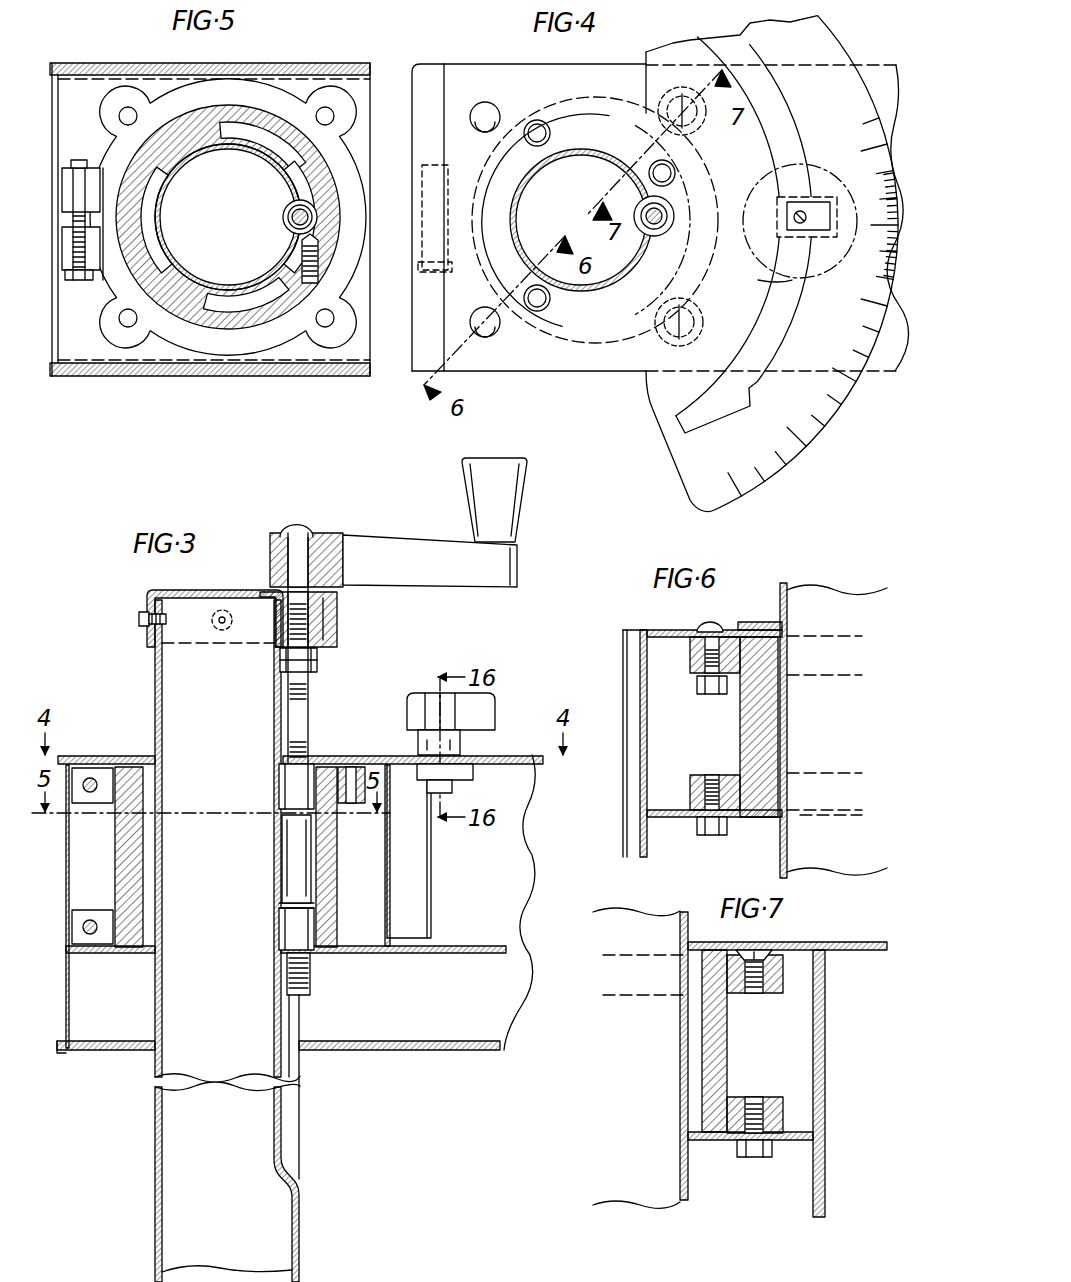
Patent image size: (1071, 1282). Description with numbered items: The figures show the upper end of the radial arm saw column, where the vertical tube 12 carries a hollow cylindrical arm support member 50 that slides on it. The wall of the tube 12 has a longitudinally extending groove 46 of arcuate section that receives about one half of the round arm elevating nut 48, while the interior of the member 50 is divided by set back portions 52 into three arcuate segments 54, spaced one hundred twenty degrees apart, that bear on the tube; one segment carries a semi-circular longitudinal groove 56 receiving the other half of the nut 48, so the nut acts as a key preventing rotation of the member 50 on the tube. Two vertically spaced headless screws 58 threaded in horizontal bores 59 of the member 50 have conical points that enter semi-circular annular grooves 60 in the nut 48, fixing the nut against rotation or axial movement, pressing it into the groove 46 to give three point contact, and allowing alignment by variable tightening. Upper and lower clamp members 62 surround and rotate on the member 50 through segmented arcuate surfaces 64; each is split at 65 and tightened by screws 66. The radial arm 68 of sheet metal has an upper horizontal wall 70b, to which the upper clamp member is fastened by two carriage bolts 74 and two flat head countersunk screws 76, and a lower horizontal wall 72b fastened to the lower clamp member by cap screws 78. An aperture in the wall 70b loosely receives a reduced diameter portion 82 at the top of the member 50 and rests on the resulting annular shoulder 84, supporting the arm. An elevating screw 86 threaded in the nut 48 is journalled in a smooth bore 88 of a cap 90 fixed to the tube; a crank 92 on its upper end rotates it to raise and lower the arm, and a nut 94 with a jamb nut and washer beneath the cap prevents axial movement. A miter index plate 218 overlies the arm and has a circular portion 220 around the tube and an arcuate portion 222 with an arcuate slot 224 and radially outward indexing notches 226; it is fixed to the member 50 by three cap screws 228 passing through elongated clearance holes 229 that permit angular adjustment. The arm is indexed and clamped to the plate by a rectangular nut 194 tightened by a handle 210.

In FIG. 5, the vertical tube 12 is at (163, 215).
In FIG. 4, the vertical tube 12 is at (581, 220).
In FIG. 3, the vertical tube 12 is at (299, 1234).
In FIG. 6, the vertical tube 12 is at (788, 735).
In FIG. 7, the vertical tube 12 is at (682, 1088).
In FIG. 5, the longitudinally extending groove 46 is at (294, 230).
In FIG. 3, the longitudinally extending groove 46 is at (297, 1026).
In FIG. 5, the arm elevating nut 48 is at (290, 210).
In FIG. 4, the arm elevating nut 48 is at (654, 216).
In FIG. 3, the arm elevating nut 48 is at (284, 860).
In FIG. 5, the cylindrical arm support member 50 is at (300, 116).
In FIG. 3, the cylindrical arm support member 50 is at (126, 847).
In FIG. 6, the cylindrical arm support member 50 is at (742, 728).
In FIG. 7, the cylindrical arm support member 50 is at (728, 1058).
In FIG. 5, the set back portions 52 is at (152, 268).
In FIG. 5, the arcuate segments 54 is at (185, 128).
In FIG. 5, the longitudinal groove 56 is at (305, 166).
In FIG. 5, the headless screws 58 is at (312, 279).
In FIG. 5, the screw threaded bores 59 is at (294, 332).
In FIG. 3, the annular grooves 60 is at (279, 806).
In FIG. 5, the clamp members 62 is at (118, 101).
In FIG. 3, the clamp members 62 is at (104, 803).
In FIG. 6, the clamp members 62 is at (692, 672).
In FIG. 7, the clamp members 62 is at (778, 995).
In FIG. 5, the segmented arcuate surfaces 64 is at (148, 342).
In FIG. 5, the split 65 is at (98, 176).
In FIG. 5, the screws 66 is at (76, 281).
In FIG. 3, the screws 66 is at (86, 792).
In FIG. 5, the radial arm 68 is at (300, 374).
In FIG. 4, the radial arm 68 is at (560, 373).
In FIG. 3, the radial arm 68 is at (426, 1053).
In FIG. 7, the radial arm 68 is at (828, 1062).
In FIG. 3, the upper horizontal connecting wall 70b is at (104, 756).
In FIG. 6, the upper horizontal connecting wall 70b is at (665, 630).
In FIG. 3, the horizontal connecting wall 72b is at (438, 945).
In FIG. 6, the horizontal connecting wall 72b is at (670, 818).
In FIG. 7, the horizontal connecting wall 72b is at (785, 1141).
In FIG. 4, the carriage bolts 74 is at (490, 90).
In FIG. 6, the carriage bolts 74 is at (708, 622).
In FIG. 4, the flat head countersunk screws 76 is at (697, 130).
In FIG. 7, the flat head countersunk screws 76 is at (752, 948).
In FIG. 6, the cap screws 78 is at (710, 836).
In FIG. 7, the cap screws 78 is at (744, 1158).
In FIG. 3, the reduced diameter portion 82 is at (143, 768).
In FIG. 6, the reduced diameter portion 82 is at (782, 640).
In FIG. 3, the annular shoulder 84 is at (218, 838).
In FIG. 6, the annular shoulder 84 is at (775, 640).
In FIG. 3, the elevating screw 86 is at (309, 722).
In FIG. 3, the smooth bore 88 is at (338, 620).
In FIG. 3, the cap 90 is at (196, 590).
In FIG. 3, the crank 92 is at (387, 540).
In FIG. 3, the nut 94 is at (318, 658).
In FIG. 3, the nut 194 is at (470, 778).
In FIG. 4, the handle 210 is at (785, 226).
In FIG. 3, the handle 210 is at (494, 708).
In FIG. 4, the miter index plate 218 is at (668, 442).
In FIG. 4, the circular portion 220 is at (566, 336).
In FIG. 6, the circular portion 220 is at (770, 624).
In FIG. 4, the arcuate portion 222 is at (692, 485).
In FIG. 4, the arcuate slot 224 is at (782, 322).
In FIG. 4, the indexing notches 226 is at (757, 47).
In FIG. 4, the cap screws 228 is at (551, 133).
In FIG. 4, the elongated clearance holes 229 is at (548, 298).